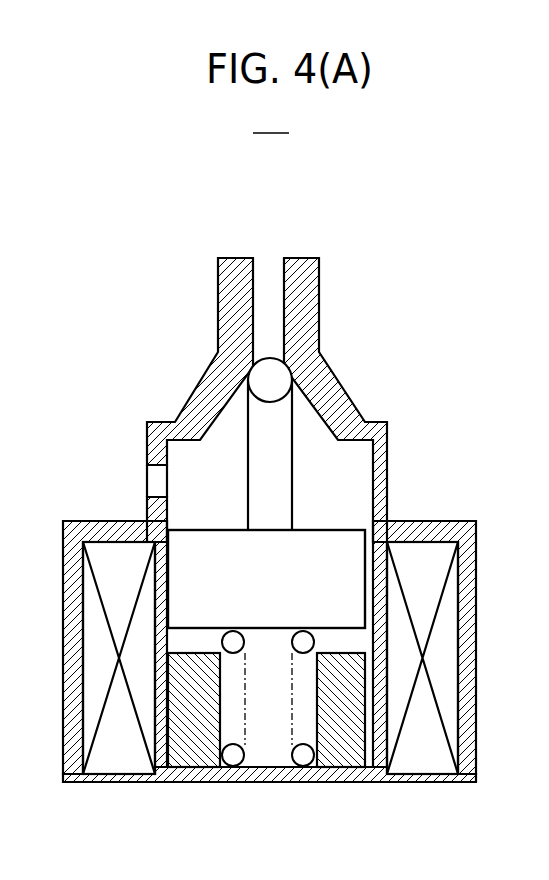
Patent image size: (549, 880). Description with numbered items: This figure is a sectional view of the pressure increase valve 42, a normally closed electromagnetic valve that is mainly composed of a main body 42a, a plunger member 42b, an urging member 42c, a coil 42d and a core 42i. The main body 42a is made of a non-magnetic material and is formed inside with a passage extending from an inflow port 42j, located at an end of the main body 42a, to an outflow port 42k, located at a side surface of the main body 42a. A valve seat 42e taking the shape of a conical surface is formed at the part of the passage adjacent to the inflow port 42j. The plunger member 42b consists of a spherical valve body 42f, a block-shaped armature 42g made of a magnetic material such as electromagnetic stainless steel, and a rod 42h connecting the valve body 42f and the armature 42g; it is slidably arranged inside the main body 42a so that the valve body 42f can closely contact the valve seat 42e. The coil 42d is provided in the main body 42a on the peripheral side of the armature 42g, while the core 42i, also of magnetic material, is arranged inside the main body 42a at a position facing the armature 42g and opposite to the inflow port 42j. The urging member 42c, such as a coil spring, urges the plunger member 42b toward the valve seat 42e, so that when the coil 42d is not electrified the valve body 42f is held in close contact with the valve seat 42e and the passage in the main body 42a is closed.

The pressure increase valve 42 is at (271, 117).
The main body 42a is at (155, 398).
The plunger member 42b is at (305, 468).
The urging member 42c is at (245, 728).
The coil 42d is at (443, 718).
The valve seat 42e is at (322, 371).
The valve body 42f is at (273, 372).
The armature 42g is at (320, 550).
The rod 42h is at (263, 443).
The core 42i is at (185, 747).
The inflow port 42j is at (270, 268).
The outflow port 42k is at (152, 483).